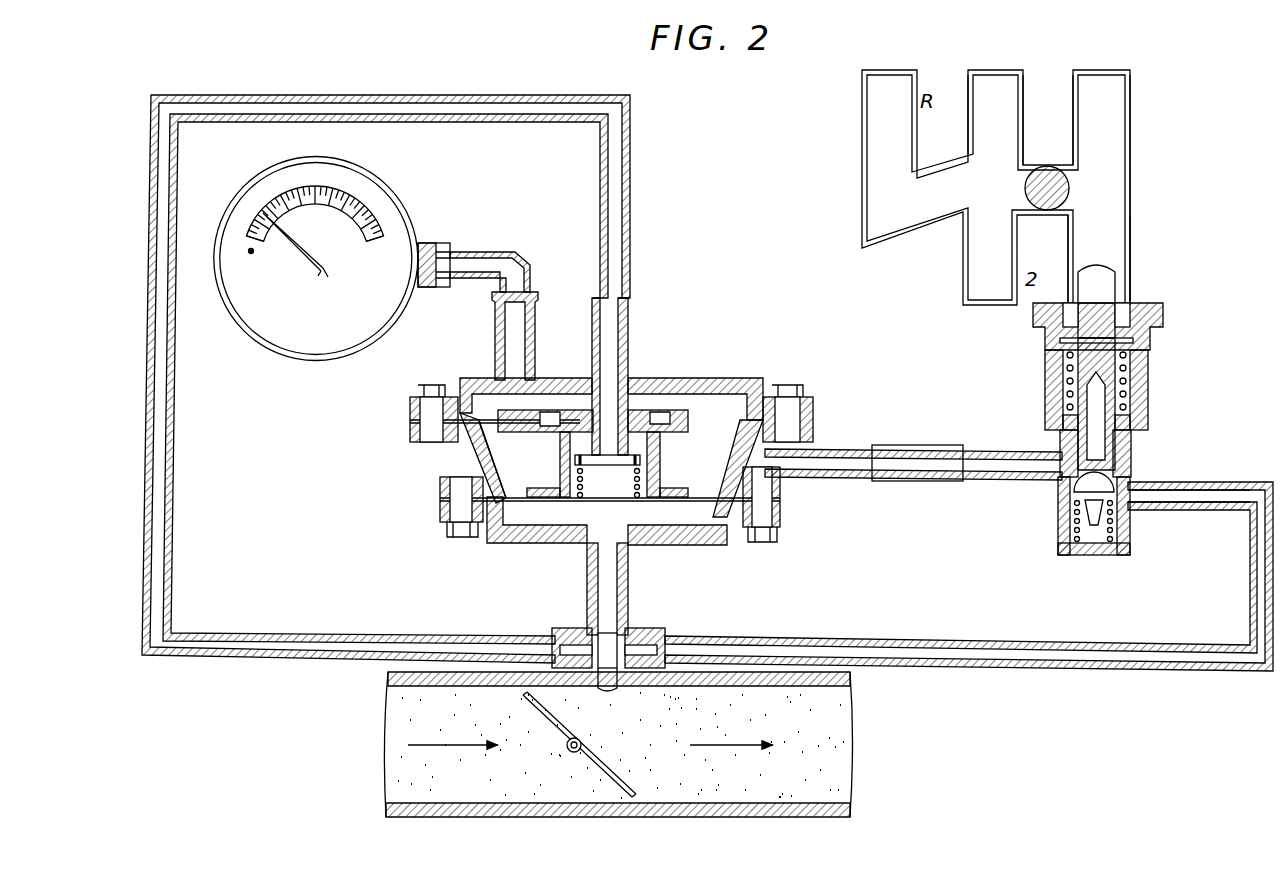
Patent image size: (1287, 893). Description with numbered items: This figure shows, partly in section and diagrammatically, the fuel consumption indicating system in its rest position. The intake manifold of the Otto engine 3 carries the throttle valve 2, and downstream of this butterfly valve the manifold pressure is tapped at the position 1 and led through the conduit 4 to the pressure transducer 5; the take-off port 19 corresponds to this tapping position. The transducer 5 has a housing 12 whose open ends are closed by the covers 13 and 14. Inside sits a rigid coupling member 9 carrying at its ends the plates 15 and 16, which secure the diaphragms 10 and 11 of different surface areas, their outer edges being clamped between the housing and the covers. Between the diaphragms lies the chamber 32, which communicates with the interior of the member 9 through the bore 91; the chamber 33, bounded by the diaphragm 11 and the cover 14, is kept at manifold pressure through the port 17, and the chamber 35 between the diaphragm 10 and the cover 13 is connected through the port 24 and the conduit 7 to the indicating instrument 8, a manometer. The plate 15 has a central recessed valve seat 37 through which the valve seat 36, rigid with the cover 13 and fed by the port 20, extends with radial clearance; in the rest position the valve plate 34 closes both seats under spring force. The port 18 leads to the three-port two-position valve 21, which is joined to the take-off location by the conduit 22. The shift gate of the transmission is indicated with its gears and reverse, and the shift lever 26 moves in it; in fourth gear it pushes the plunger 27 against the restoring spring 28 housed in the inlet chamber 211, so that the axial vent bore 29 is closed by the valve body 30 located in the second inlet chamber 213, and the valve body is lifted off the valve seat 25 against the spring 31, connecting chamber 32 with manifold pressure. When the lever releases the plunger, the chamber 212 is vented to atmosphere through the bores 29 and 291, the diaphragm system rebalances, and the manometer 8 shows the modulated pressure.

The pressure tapping position 1 is at (1004, 120).
The throttle valve 2 is at (583, 745).
The Otto engine 3 is at (1112, 187).
The conduit 4 is at (1106, 276).
The pressure transducer 5 is at (812, 382).
The conduit 7 is at (530, 251).
The indicating instrument 8 is at (320, 361).
The rigid coupling member 9 is at (558, 458).
The diaphragm 10 is at (772, 393).
The diaphragm 11 is at (700, 505).
The housing 12 is at (462, 452).
The cover 13 is at (689, 378).
The cover 14 is at (498, 545).
The plate 15 is at (712, 394).
The plate 16 is at (665, 545).
The port 17 is at (587, 581).
The port 18 is at (904, 474).
The take-off port 19 is at (604, 656).
The port 20 is at (633, 324).
The three-port two-position valve 21 is at (1130, 468).
The conduit 22 is at (882, 640).
The conduit 24 is at (537, 318).
The valve seat 25 is at (1062, 495).
The shift lever 26 is at (1070, 188).
The plunger 27 is at (1112, 340).
The restoring spring 28 is at (1128, 373).
The axial vent bore 29 is at (1133, 480).
The valve body 30 is at (1090, 492).
The spring 31 is at (1118, 520).
The chamber 32 is at (780, 478).
The chamber 33 is at (556, 522).
The valve plate 34 is at (613, 466).
The chamber 35 is at (558, 394).
The valve seat 36 is at (628, 378).
The valve seat 37 is at (652, 453).
The bore 91 is at (655, 474).
The inlet chamber 211 is at (1130, 352).
The chamber 212 is at (1132, 446).
The second inlet chamber 213 is at (1090, 545).
The bore 291 is at (1138, 398).